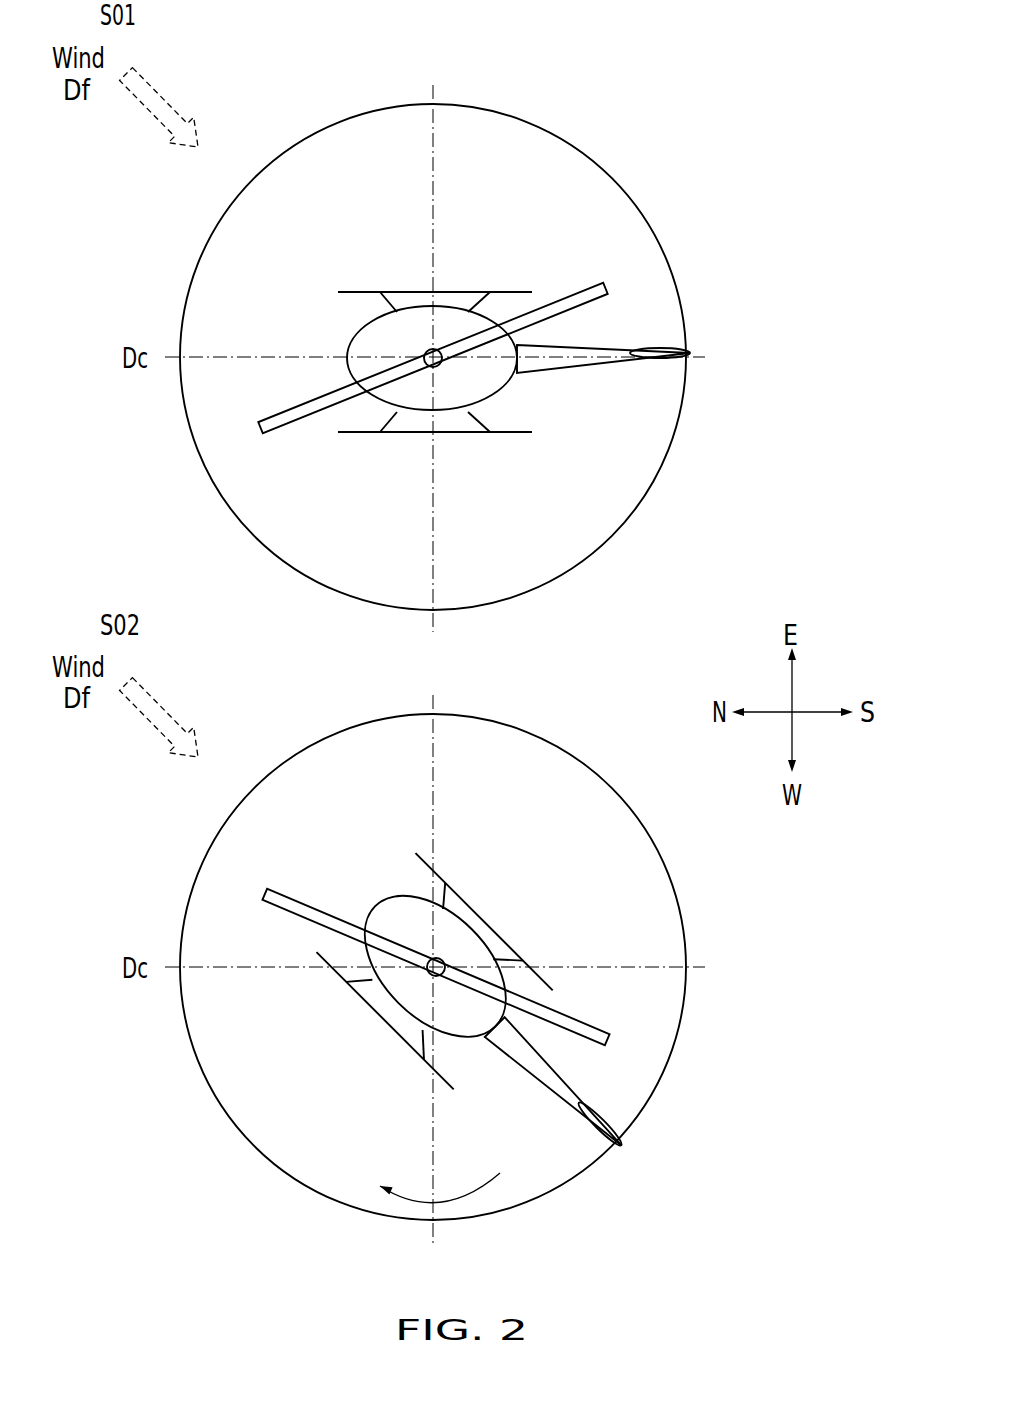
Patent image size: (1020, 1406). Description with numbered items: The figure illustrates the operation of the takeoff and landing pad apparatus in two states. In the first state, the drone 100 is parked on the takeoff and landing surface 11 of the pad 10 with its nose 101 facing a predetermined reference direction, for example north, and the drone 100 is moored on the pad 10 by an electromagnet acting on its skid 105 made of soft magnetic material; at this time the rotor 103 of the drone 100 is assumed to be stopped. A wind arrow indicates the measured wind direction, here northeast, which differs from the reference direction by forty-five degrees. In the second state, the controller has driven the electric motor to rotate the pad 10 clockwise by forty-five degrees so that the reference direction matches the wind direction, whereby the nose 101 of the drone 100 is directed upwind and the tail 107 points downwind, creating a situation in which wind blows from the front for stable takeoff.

The pad 10 is at (613, 180).
The takeoff and landing surface 11 is at (625, 242).
The drone 100 is at (478, 265).
The nose 101 is at (345, 357).
The rotor 103 is at (570, 312).
The skid 105 is at (398, 292).
The tail 107 is at (628, 358).